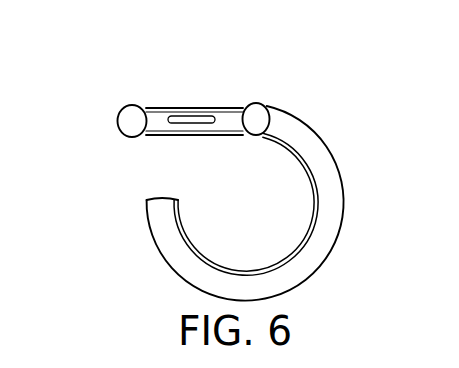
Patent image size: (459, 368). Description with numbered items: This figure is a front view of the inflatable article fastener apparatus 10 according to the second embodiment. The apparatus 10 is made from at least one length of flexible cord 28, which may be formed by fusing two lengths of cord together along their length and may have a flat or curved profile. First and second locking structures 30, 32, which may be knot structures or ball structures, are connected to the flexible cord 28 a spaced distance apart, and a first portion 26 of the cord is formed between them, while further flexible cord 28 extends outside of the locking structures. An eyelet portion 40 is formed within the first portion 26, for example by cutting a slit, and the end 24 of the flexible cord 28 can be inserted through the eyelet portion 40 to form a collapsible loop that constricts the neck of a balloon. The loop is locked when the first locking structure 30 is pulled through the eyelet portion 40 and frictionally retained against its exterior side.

The inflatable article fastener apparatus 10 is at (413, 87).
The end of the flexible cord 24 is at (166, 201).
The first portion 26 is at (156, 130).
The flexible cord 28 is at (316, 148).
The first locking structure 30 is at (255, 108).
The second locking structure 32 is at (132, 111).
The eyelet portion 40 is at (194, 111).